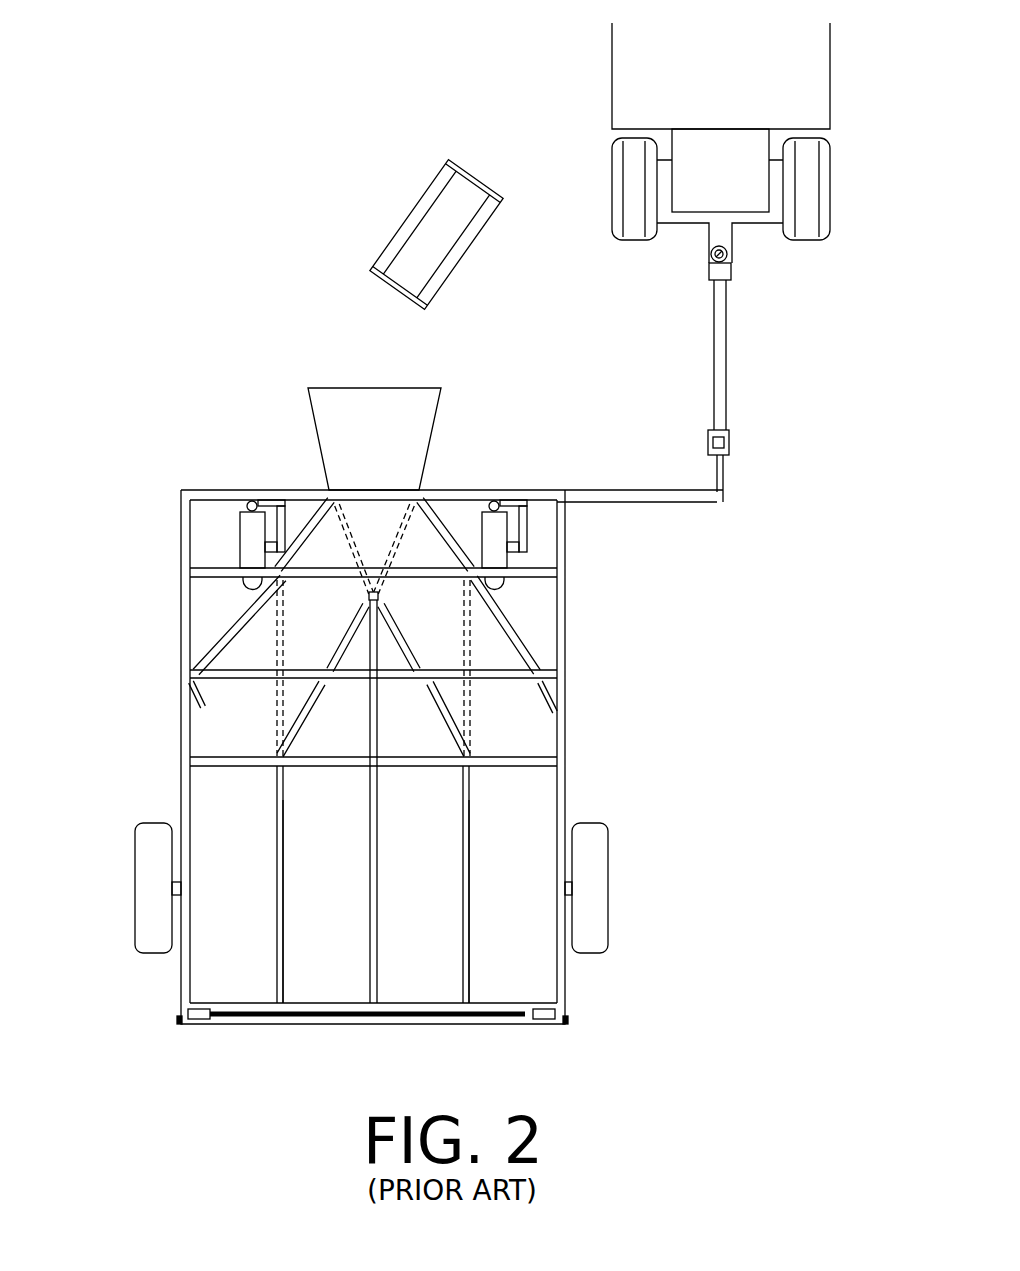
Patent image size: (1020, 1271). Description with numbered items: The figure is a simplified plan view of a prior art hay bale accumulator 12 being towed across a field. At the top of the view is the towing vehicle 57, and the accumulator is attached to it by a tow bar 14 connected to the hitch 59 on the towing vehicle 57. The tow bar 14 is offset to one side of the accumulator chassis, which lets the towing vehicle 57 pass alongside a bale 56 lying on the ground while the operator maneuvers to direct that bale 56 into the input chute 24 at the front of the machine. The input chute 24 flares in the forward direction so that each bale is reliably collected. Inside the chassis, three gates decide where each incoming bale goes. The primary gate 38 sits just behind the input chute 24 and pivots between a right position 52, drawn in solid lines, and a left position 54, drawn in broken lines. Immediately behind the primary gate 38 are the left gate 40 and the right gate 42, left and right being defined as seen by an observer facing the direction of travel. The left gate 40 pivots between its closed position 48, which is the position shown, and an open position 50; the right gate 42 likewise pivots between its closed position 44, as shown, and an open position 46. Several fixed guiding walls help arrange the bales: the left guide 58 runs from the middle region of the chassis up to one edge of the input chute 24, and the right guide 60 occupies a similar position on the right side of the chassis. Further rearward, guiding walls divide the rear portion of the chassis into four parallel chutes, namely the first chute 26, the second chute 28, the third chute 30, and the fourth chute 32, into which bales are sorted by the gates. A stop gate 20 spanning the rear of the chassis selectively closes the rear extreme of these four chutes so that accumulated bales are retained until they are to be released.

The trailer frame 12 is at (565, 795).
The tow bar 14 is at (720, 350).
The stop gate 20 is at (523, 1020).
The input chute 24 is at (365, 414).
The first chute 26 is at (232, 845).
The second chute 28 is at (308, 903).
The third chute 30 is at (422, 868).
The fourth chute 32 is at (520, 935).
The primary gate 38 is at (402, 548).
The left gate 40 is at (303, 707).
The right gate 42 is at (468, 737).
The closed position 44 is at (413, 657).
The open position 46 is at (468, 645).
The closed position 48 is at (337, 650).
The open position 50 is at (273, 642).
The right position 52 is at (420, 498).
The left position 54 is at (327, 502).
The bale 56 is at (438, 235).
The towing vehicle 57 is at (733, 193).
The left guide 58 is at (253, 608).
The hitch 59 is at (710, 265).
The right guide 60 is at (502, 618).